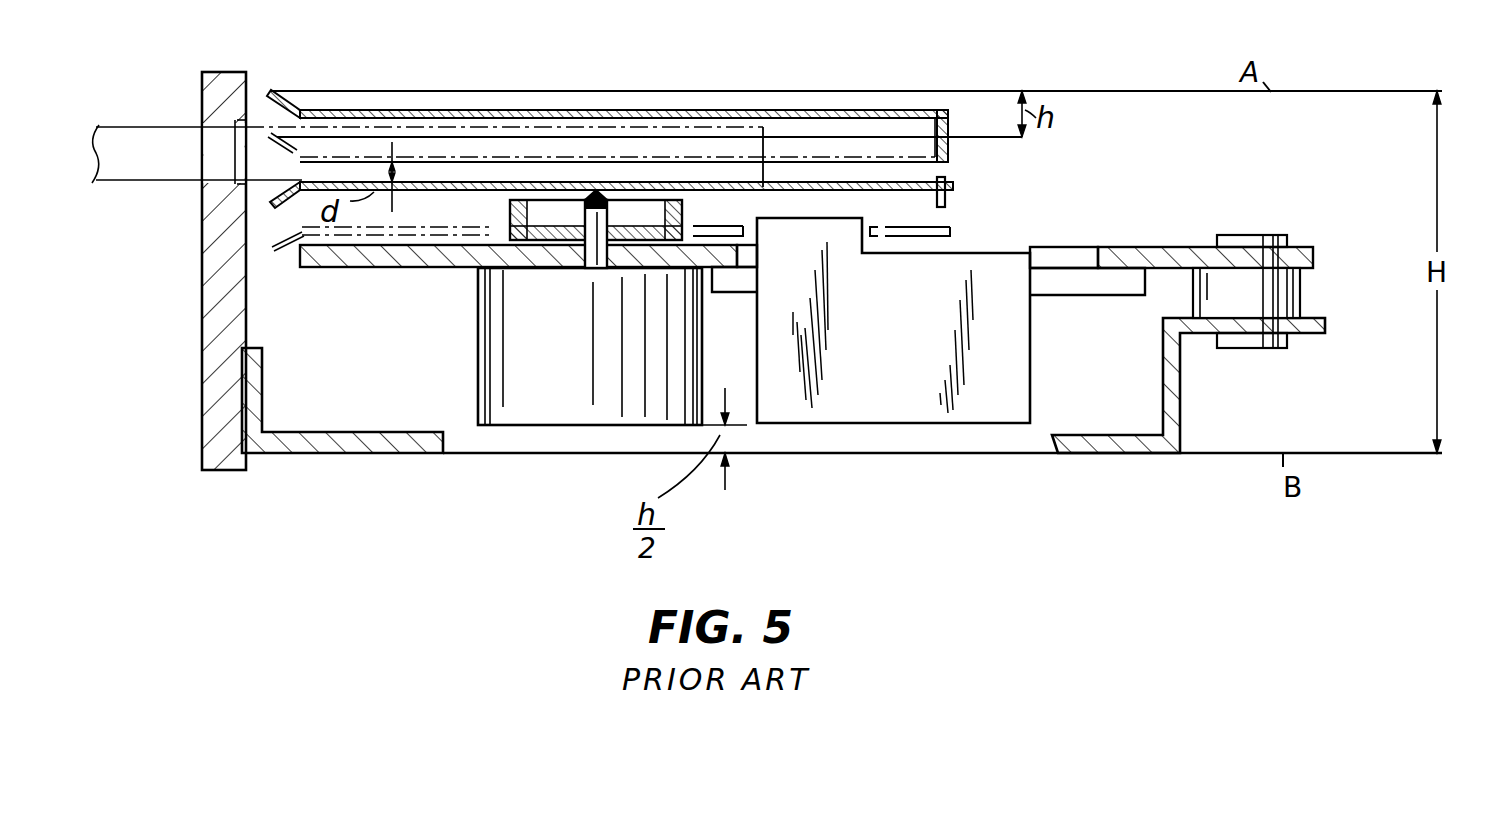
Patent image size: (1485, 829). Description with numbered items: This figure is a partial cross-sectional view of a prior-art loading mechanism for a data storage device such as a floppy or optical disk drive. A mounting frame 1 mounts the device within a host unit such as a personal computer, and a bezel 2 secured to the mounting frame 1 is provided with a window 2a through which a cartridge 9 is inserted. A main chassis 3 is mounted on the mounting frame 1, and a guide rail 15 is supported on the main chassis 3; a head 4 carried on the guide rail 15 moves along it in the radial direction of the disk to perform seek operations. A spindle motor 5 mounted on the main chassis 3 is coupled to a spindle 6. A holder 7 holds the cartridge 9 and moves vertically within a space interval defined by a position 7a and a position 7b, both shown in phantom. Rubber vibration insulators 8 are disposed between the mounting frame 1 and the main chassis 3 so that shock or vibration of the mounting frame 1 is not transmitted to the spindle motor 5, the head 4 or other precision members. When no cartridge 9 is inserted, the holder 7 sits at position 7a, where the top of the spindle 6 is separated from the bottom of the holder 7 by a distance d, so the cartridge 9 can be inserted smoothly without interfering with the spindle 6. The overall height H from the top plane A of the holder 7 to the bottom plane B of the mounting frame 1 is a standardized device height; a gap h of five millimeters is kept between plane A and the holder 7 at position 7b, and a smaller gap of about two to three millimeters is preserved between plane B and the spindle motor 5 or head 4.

The mounting frame 1 is at (361, 447).
The bezel 2 is at (216, 463).
The window 2a is at (237, 122).
The main chassis 3 is at (1148, 258).
The head 4 is at (872, 412).
The spindle motor 5 is at (553, 410).
The spindle 6 is at (600, 198).
The holder 7 is at (313, 108).
The position 7a is at (380, 108).
The position 7b is at (484, 157).
The rubber vibration insulators 8 is at (1302, 298).
The cartridge 9 is at (140, 142).
The guide rail 15 is at (1063, 280).